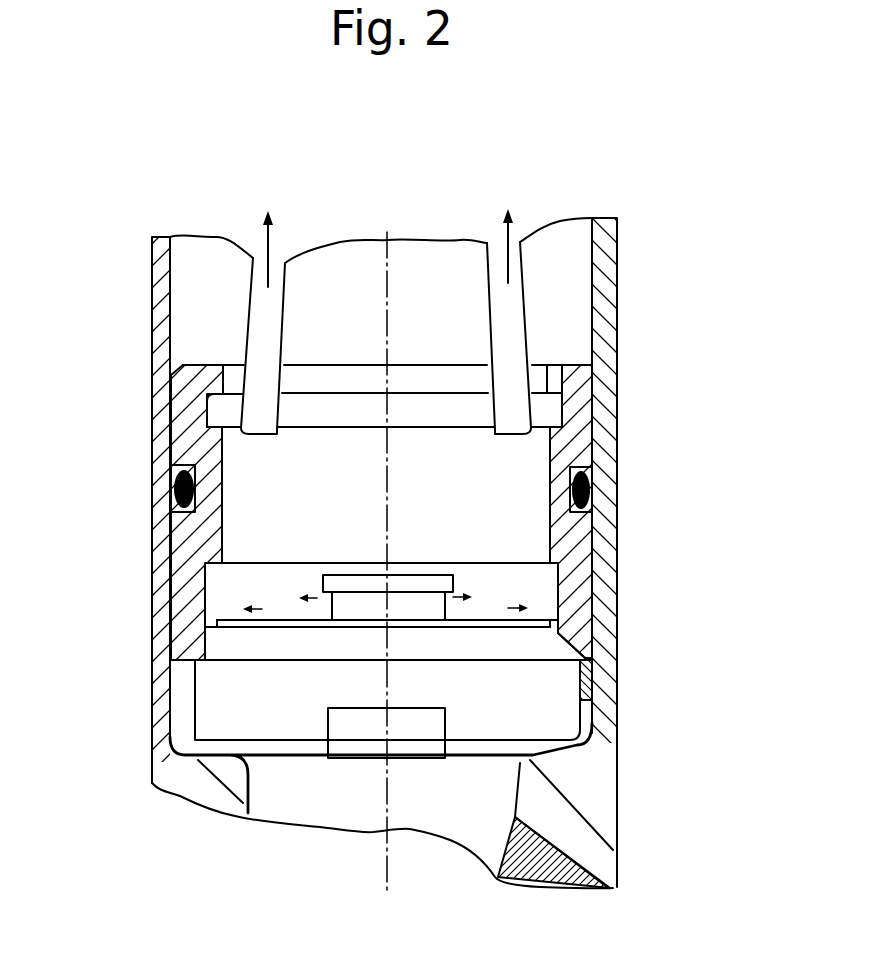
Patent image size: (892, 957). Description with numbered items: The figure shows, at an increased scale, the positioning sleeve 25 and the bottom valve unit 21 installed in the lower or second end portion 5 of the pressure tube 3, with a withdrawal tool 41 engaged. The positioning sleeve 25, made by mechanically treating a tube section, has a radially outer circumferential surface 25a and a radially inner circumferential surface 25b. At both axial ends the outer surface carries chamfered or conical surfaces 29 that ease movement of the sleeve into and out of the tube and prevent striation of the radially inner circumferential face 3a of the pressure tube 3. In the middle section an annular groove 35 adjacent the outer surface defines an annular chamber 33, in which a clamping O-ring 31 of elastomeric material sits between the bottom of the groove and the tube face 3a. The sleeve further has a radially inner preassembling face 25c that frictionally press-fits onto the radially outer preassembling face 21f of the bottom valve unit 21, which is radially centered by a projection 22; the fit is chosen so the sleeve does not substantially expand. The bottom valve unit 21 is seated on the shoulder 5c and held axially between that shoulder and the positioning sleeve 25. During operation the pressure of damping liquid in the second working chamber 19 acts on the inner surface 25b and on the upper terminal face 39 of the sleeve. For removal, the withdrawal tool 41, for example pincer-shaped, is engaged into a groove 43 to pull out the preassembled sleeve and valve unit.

The pressure tube 3 is at (603, 433).
The radially inner circumferential face of the pressure tube 3a is at (174, 336).
The lower or second end portion 5 is at (205, 782).
The shoulder 5c is at (568, 770).
The second working chamber 19 is at (568, 315).
The bottom valve unit 21 is at (562, 708).
The radially outer preassembling face 21f is at (566, 636).
The projection 22 is at (315, 647).
The positioning sleeve 25 is at (572, 602).
The radially outer circumferential surface 25a is at (600, 547).
The radially inner circumferential surface 25b is at (545, 536).
The radially inner preassembling face 25c is at (212, 648).
The chamfered or conical surfaces 29 is at (597, 368).
The clamping O-ring 31 is at (598, 492).
The annular chamber 33 is at (182, 453).
The annular groove 35 is at (187, 518).
The upper terminal face 39 is at (213, 355).
The withdrawal tool 41 is at (508, 297).
The groove 43 is at (557, 382).